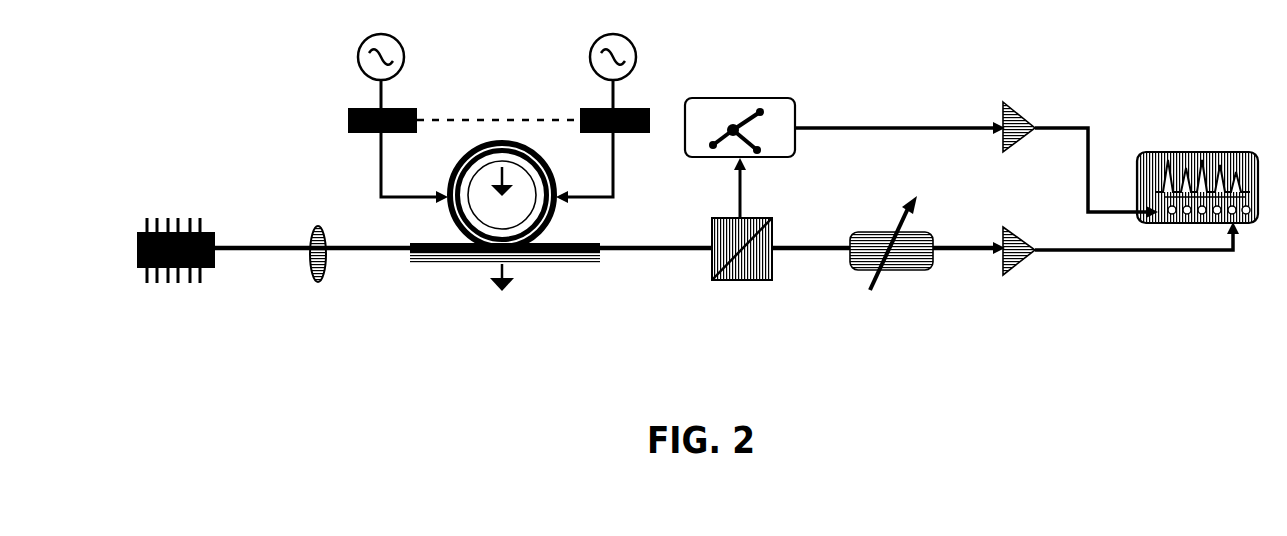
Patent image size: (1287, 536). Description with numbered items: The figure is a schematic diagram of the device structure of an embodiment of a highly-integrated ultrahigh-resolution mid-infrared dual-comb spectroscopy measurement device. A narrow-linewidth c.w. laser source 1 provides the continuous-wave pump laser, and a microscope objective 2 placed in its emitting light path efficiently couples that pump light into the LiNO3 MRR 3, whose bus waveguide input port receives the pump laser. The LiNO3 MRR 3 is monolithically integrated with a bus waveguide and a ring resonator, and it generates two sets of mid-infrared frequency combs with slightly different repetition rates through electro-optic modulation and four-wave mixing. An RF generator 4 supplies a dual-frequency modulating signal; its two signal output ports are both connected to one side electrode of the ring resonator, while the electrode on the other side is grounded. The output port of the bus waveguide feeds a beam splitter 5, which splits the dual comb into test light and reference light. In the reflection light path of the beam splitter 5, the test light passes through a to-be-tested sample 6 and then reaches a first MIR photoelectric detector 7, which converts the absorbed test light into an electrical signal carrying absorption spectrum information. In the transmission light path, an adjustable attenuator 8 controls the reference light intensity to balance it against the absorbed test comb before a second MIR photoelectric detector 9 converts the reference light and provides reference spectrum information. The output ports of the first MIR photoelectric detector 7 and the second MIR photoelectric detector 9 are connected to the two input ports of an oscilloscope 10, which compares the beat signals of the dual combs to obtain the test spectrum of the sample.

The narrow-linewidth c.w. laser source 1 is at (176, 285).
The microscope objective 2 is at (317, 289).
The LiNO3 MRR 3 is at (505, 244).
The RF generator 4 is at (482, 118).
The beam splitter 5 is at (742, 249).
The to-be-tested sample 6 is at (845, 96).
The first MIR photoelectric detector 7 is at (1080, 126).
The adjustable attenuator 8 is at (891, 268).
The second MIR photoelectric detector 9 is at (1121, 281).
The oscilloscope 10 is at (1197, 241).